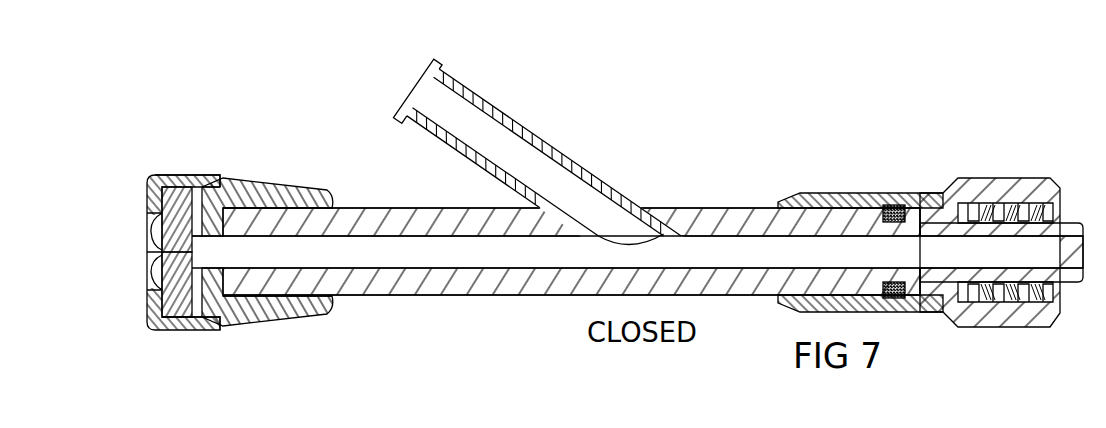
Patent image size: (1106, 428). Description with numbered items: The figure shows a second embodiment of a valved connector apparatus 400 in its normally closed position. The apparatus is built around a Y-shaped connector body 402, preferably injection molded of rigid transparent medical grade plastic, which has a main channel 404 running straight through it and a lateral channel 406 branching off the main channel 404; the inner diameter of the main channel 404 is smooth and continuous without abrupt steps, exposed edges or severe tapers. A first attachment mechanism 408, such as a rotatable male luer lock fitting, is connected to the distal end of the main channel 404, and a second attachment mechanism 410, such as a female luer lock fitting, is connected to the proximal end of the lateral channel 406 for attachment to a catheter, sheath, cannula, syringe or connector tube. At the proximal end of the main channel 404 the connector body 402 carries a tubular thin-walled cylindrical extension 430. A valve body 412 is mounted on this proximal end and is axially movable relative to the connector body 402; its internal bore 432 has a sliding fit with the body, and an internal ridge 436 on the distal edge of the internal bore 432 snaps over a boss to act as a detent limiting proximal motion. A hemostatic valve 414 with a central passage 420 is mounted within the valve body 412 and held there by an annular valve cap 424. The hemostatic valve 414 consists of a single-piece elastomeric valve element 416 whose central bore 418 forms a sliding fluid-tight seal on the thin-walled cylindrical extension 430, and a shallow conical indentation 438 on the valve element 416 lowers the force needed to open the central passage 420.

The valved connector apparatus 400 is at (611, 58).
The Y-shaped connector body 402 is at (648, 208).
The main channel 404 is at (435, 253).
The lateral channel 406 is at (497, 130).
The first attachment mechanism 408 is at (891, 158).
The second attachment mechanism 410 is at (437, 60).
The valve body 412 is at (260, 187).
The hemostatic valve 414 is at (118, 334).
The single-piece valve element 416 is at (183, 327).
The central bore 418 is at (213, 173).
The central passage 420 is at (160, 252).
The annular valve cap 424 is at (160, 175).
The thin-walled cylindrical extension 430 is at (260, 323).
The internal bore 432 is at (273, 195).
The internal ridge 436 is at (313, 295).
The shallow conical indentation 438 is at (153, 258).